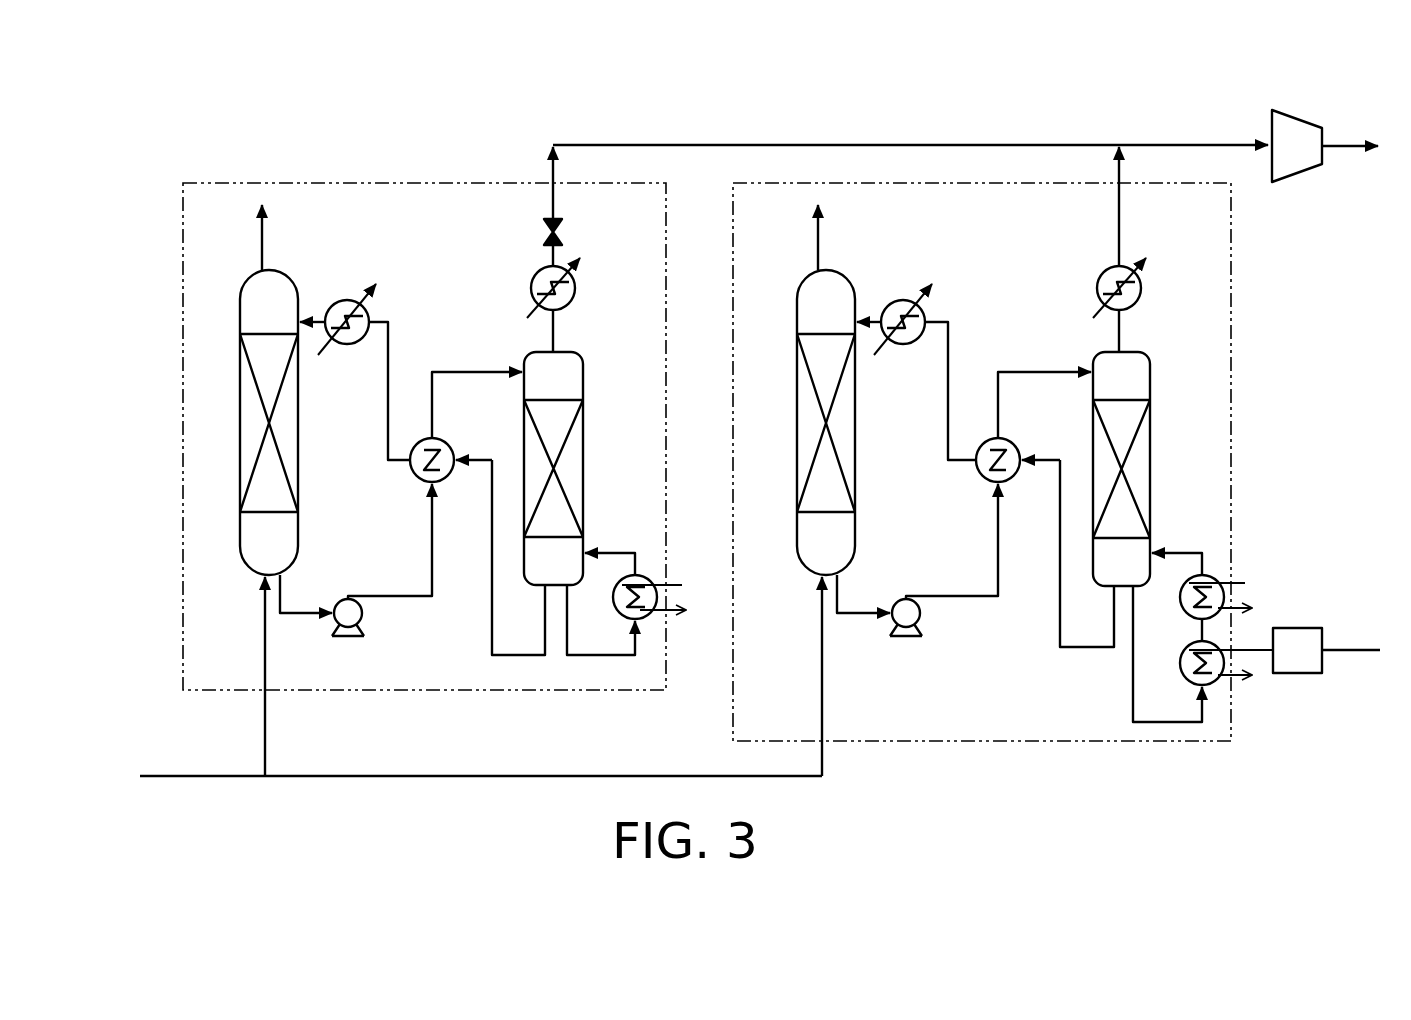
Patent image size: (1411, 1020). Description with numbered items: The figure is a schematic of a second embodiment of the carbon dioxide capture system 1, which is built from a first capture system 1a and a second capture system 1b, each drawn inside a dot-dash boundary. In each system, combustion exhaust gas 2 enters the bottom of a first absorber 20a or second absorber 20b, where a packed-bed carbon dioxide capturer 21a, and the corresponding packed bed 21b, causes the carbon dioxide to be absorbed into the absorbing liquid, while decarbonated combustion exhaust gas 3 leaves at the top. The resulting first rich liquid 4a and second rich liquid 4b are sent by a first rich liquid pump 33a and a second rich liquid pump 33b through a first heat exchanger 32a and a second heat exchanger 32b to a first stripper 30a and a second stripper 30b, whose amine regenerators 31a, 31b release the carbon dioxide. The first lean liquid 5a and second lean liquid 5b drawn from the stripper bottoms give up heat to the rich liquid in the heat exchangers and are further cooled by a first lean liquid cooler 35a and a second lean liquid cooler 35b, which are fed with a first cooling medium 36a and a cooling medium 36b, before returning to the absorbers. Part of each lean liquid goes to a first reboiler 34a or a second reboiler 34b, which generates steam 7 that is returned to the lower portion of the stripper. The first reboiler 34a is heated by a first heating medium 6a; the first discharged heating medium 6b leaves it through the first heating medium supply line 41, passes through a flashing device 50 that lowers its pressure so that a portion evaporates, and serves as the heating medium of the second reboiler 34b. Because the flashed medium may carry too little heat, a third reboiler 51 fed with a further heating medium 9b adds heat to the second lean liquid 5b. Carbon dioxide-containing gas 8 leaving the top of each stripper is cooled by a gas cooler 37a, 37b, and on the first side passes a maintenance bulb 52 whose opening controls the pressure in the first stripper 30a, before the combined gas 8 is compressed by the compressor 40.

The carbon dioxide capture system 1 is at (157, 149).
The first capture system 1a is at (183, 492).
The second capture system 1b is at (1233, 343).
The combustion exhaust gas 2 is at (254, 617).
The decarbonated combustion exhaust gas 3 is at (250, 222).
The first rich liquid 4a is at (428, 611).
The second rich liquid 4b is at (985, 611).
The first lean liquid 5a is at (602, 670).
The second lean liquid 5b is at (1120, 655).
The first heating medium 6a is at (690, 572).
The first discharged heating medium 6b is at (672, 622).
The steam 7 is at (600, 535).
The carbon dioxide-containing gas 8 is at (563, 170).
The heating medium 9b is at (1247, 583).
The first absorber 20a is at (244, 420).
The second absorber 20b is at (801, 420).
The carbon dioxide capturer 21a is at (247, 427).
The packing 21b is at (804, 427).
The first stripper 30a is at (552, 444).
The second stripper 30b is at (1120, 444).
The amine regenerator 31a is at (584, 455).
The amine regenerator 31b is at (1152, 455).
The first heat exchanger 32a is at (414, 482).
The second heat exchanger 32b is at (977, 481).
The first rich liquid pump 33a is at (349, 637).
The second rich liquid pump 33b is at (906, 637).
The first reboiler 34a is at (620, 620).
The second reboiler 34b is at (1178, 668).
The first lean liquid cooler 35a is at (343, 298).
The second lean liquid cooler 35b is at (900, 298).
The first cooling medium 36a is at (338, 357).
The cooling medium 36b is at (896, 357).
The gas cooler 37a is at (535, 268).
The gas cooler 37b is at (1103, 268).
The compressor 40 is at (1299, 120).
The first heating medium supply line 41 is at (665, 622).
The flashing device 50 is at (1297, 628).
The third reboiler 51 is at (1178, 602).
The maintenance bulb 52 is at (563, 234).